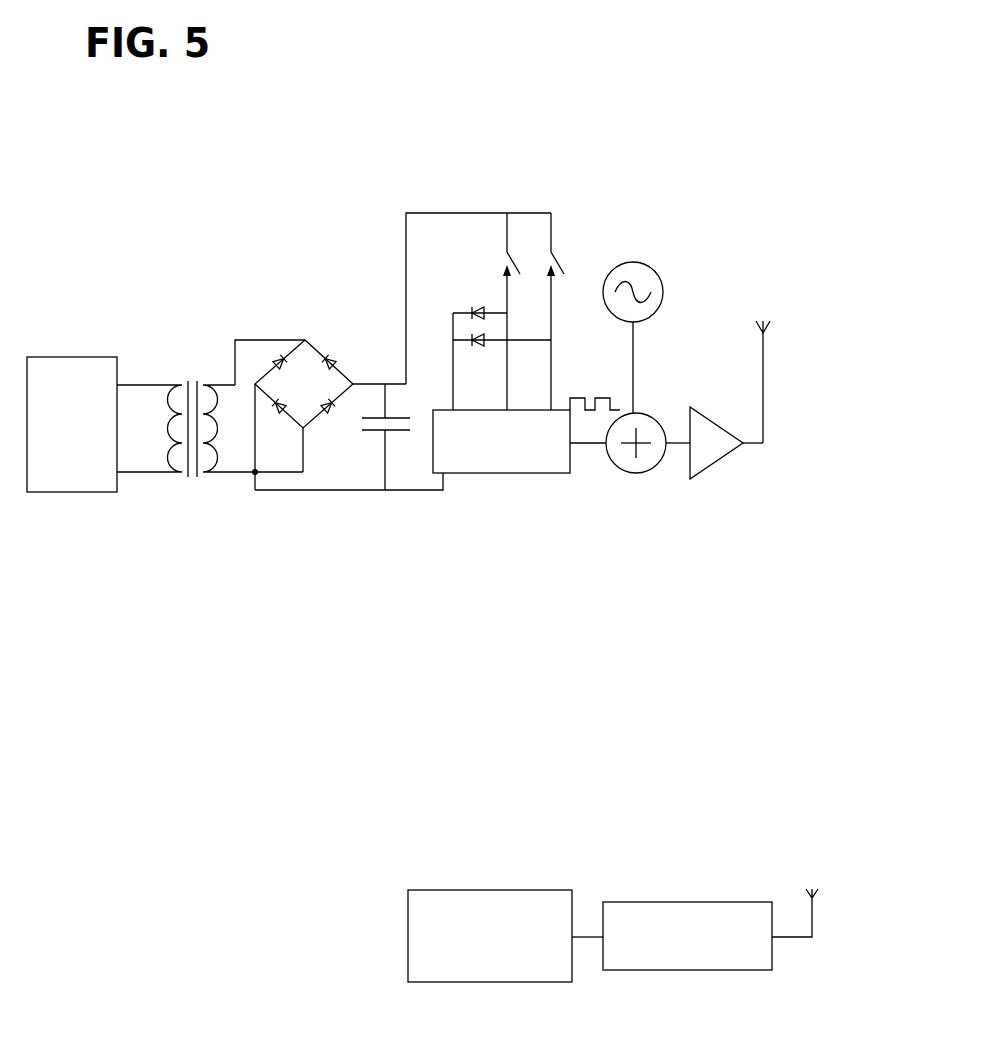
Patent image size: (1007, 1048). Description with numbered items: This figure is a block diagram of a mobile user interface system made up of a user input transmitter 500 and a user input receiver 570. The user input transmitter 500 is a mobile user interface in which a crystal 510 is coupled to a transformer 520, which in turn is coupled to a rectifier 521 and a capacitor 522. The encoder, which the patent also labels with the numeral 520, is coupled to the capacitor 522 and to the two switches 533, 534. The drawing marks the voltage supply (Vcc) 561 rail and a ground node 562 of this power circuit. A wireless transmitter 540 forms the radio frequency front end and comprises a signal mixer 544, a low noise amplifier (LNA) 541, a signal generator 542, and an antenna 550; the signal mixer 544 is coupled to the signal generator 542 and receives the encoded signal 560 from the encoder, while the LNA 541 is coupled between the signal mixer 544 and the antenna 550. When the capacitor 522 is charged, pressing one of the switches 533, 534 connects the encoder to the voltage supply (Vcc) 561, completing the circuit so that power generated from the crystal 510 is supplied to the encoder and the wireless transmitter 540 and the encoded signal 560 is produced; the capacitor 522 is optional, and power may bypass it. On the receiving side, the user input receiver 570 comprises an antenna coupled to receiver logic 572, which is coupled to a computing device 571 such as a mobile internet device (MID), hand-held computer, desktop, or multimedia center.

The user input transmitter 500 is at (675, 122).
The crystal 510 is at (53, 448).
The transformer 520 is at (148, 476).
The rectifier 521 is at (313, 345).
The capacitor 522 is at (384, 455).
The switch 533 is at (505, 230).
The switch 534 is at (554, 248).
The wireless transmitter 540 is at (657, 446).
The low noise amplifier (LNA) 541 is at (698, 470).
The signal generator 542 is at (648, 262).
The signal mixer 544 is at (650, 472).
The antenna 550 is at (763, 430).
The encoded signal 560 is at (585, 445).
The voltage supply (Vcc) 561 is at (406, 229).
The GND 562 is at (408, 495).
The user input receiver 570 is at (652, 877).
The computing device 571 is at (471, 960).
The receiver logic 572 is at (668, 960).